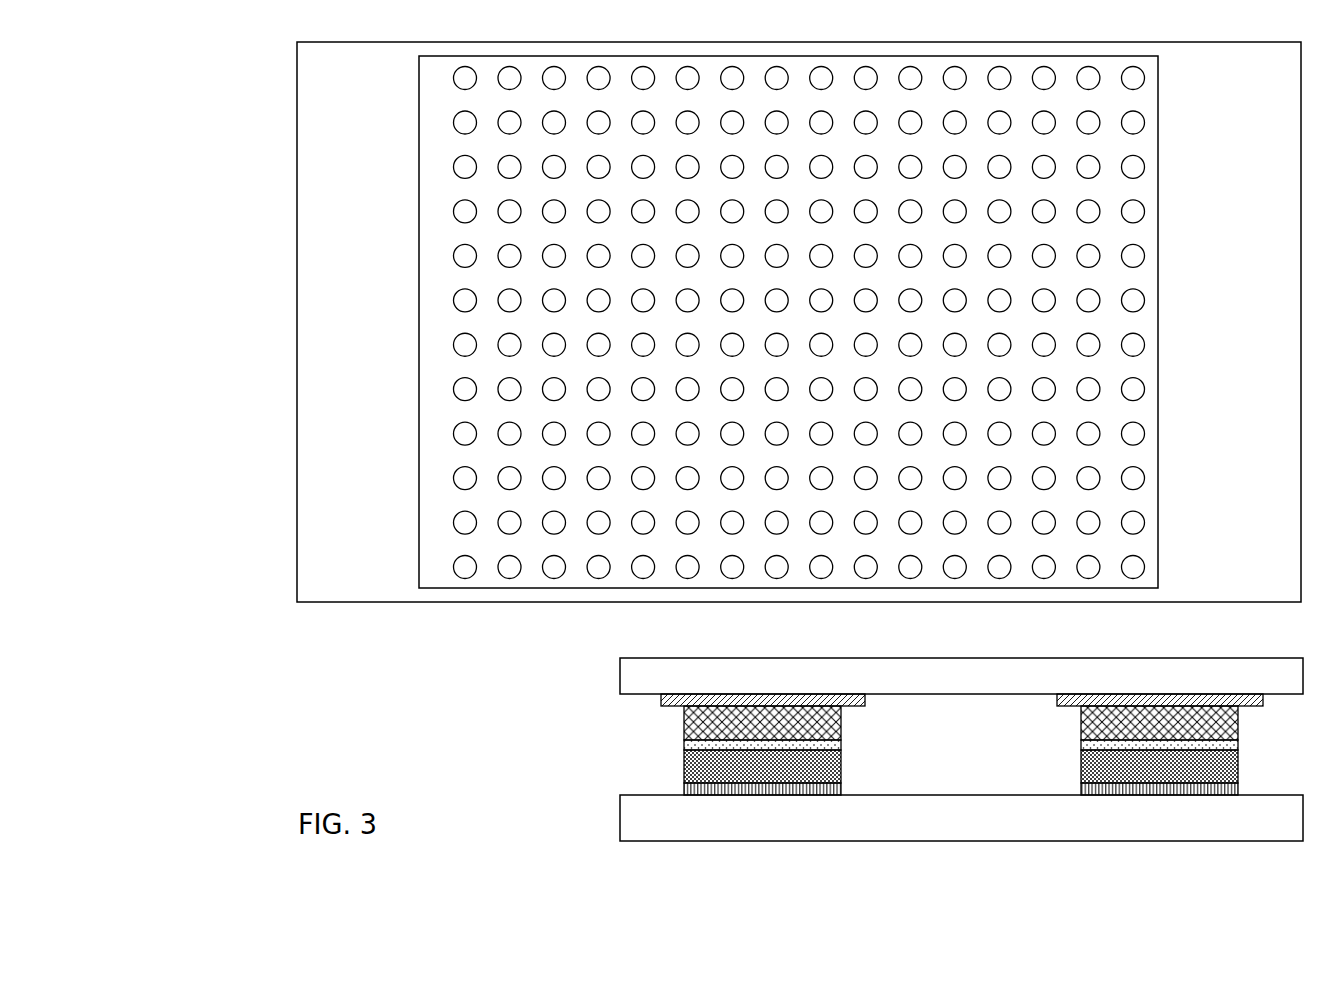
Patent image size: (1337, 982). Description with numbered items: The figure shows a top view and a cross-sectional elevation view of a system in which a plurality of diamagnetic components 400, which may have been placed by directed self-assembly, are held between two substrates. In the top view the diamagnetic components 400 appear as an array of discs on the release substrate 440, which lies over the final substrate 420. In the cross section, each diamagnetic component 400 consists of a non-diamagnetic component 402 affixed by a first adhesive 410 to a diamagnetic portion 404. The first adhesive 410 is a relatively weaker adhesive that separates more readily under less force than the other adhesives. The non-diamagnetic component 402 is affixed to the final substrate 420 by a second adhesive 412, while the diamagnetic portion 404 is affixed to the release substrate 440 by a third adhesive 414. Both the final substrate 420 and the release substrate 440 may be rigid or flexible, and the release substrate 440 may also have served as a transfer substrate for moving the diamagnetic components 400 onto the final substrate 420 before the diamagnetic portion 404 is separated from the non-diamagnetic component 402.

The diamagnetic component 400 is at (454, 75).
The non-diamagnetic component 402 is at (684, 766).
The diamagnetic portion 404 is at (684, 720).
The first adhesive 410 is at (841, 745).
The second adhesive 412 is at (841, 790).
The third adhesive 414 is at (865, 706).
The final substrate 420 is at (296, 179).
The release substrate 440 is at (419, 141).